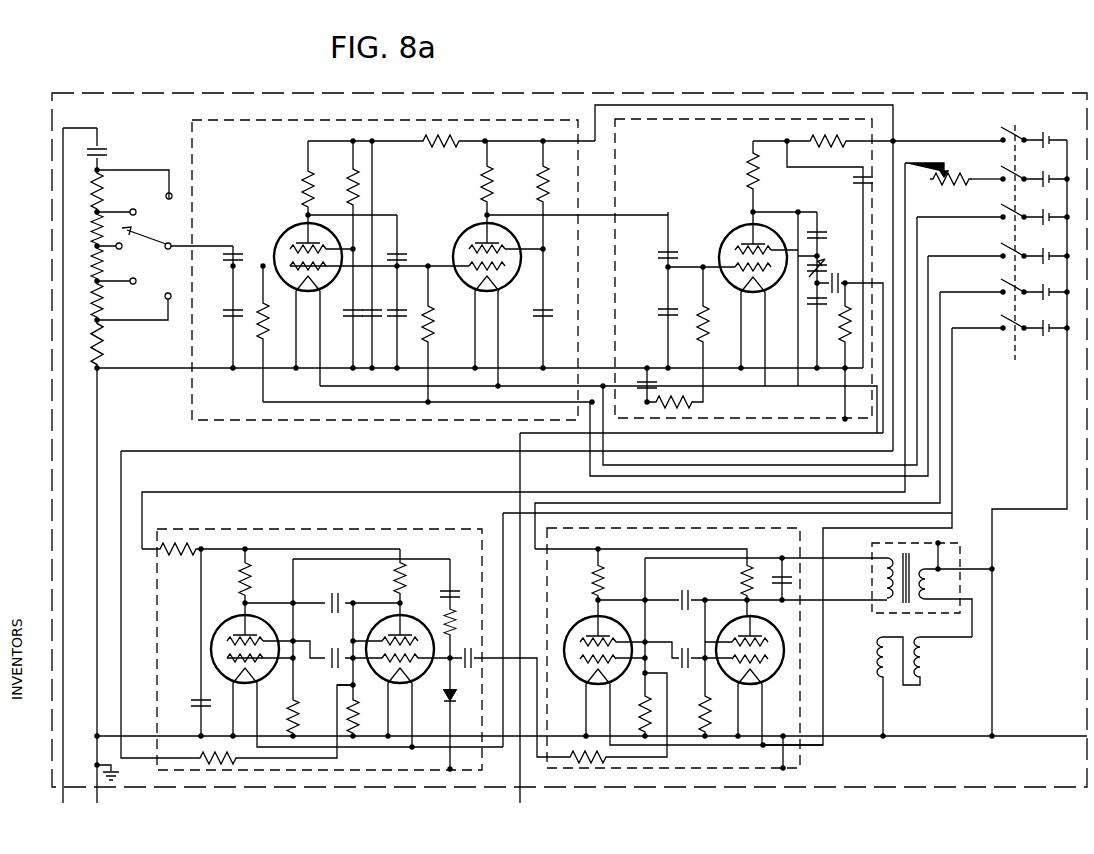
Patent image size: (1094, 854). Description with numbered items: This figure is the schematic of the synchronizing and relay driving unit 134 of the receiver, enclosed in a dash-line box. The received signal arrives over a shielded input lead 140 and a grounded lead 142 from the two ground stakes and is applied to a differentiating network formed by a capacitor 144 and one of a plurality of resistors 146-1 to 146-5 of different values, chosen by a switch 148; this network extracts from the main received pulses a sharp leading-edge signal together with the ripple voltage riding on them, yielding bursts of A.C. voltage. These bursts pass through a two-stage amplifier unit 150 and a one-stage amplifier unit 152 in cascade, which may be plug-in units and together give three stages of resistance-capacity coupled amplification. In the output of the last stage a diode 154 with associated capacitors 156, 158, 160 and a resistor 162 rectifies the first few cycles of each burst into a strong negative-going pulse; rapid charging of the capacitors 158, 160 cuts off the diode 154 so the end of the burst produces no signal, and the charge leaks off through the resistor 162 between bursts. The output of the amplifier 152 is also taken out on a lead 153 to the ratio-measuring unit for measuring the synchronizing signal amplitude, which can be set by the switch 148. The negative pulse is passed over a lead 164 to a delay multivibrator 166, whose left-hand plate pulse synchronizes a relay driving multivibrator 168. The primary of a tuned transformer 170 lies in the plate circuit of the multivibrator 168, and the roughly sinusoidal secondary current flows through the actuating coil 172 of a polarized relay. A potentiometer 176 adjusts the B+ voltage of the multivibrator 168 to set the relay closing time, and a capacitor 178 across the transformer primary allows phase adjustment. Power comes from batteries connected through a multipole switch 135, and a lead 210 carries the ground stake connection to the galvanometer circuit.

The synchronizing and relay driving unit 134 is at (527, 93).
The multipole switch 135 is at (1015, 340).
The shielded input lead 140 is at (60, 407).
The grounded lead 142 is at (98, 405).
The capacitor 144 is at (100, 149).
The resistor 146-1 is at (103, 182).
The resistor 146-5 is at (104, 343).
The switch 148 is at (126, 245).
The two-stage amplifier unit 150 is at (386, 118).
The one-stage amplifier unit 152 is at (796, 275).
The lead 153 is at (706, 434).
The diode 154 is at (821, 266).
The capacitor 156 is at (817, 231).
The capacitor 158 is at (814, 303).
The capacitor 160 is at (833, 283).
The resistor 162 is at (842, 325).
The lead 164 is at (264, 454).
The delay multivibrator 166 is at (330, 529).
The relay driving multivibrator 168 is at (711, 639).
The tuned transformer 170 is at (900, 556).
The actuating coil 172 is at (876, 657).
The potentiometer 176 is at (931, 182).
The capacitor 178 is at (774, 574).
The lead 210 is at (1020, 736).